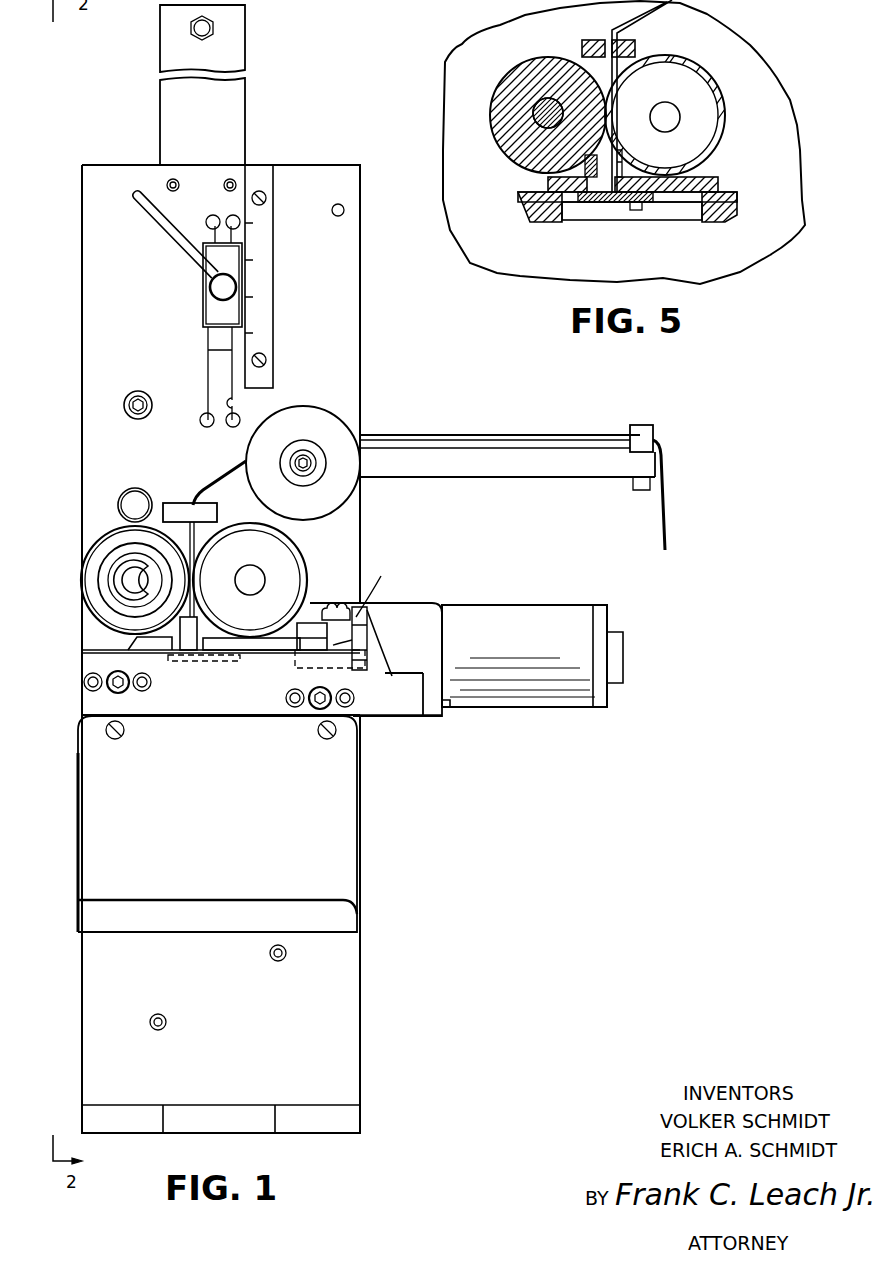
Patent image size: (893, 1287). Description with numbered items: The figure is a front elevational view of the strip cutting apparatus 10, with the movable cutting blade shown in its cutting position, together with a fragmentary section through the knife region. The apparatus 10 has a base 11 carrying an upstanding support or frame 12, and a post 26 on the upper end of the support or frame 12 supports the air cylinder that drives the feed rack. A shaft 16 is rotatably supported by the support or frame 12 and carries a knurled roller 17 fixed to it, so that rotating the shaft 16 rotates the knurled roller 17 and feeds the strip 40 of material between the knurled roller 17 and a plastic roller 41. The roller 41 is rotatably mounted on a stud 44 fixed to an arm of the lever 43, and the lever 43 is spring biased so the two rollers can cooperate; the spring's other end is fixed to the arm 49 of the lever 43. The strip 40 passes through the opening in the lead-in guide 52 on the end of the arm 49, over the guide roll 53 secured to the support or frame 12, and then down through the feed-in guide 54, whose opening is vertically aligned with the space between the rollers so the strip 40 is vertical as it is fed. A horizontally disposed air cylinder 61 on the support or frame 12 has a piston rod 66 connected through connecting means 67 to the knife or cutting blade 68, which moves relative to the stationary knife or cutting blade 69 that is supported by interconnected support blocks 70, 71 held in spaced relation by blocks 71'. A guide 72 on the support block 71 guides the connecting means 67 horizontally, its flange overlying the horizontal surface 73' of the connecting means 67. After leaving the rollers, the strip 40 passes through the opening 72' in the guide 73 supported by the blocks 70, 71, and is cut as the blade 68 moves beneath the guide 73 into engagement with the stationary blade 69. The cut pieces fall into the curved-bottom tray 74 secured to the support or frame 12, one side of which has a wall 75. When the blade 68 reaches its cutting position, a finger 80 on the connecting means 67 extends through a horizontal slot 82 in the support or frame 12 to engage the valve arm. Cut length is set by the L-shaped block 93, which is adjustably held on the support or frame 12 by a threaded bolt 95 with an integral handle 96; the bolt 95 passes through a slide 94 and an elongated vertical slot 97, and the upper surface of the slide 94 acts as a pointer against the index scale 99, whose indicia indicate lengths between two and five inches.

In FIG. 1, the apparatus 10 is at (442, 875).
In FIG. 1, the base 11 is at (358, 1128).
In FIG. 1, the support or frame 12 is at (358, 1012).
In FIG. 5, the support or frame 12 is at (745, 42).
In FIG. 1, the shaft 16 is at (258, 592).
In FIG. 5, the shaft 16 is at (668, 108).
In FIG. 1, the knurled roller 17 is at (320, 545).
In FIG. 5, the knurled roller 17 is at (697, 64).
In FIG. 1, the post 26 is at (242, 112).
In FIG. 1, the strip of material 40 is at (228, 478).
In FIG. 1, the roller 41 is at (95, 537).
In FIG. 5, the roller 41 is at (535, 62).
In FIG. 1, the lever 43 is at (478, 480).
In FIG. 1, the stud 44 is at (123, 588).
In FIG. 5, the stud 44 is at (540, 112).
In FIG. 1, the arm 49 is at (523, 437).
In FIG. 1, the lead-in guide 52 is at (645, 425).
In FIG. 1, the guide roll 53 is at (303, 410).
In FIG. 1, the feed-in guide 54 is at (217, 503).
In FIG. 5, the feed-in guide 54 is at (595, 40).
In FIG. 1, the air cylinder 61 is at (513, 712).
In FIG. 1, the piston rod 66 is at (372, 648).
In FIG. 1, the connecting means 67 is at (320, 643).
In FIG. 5, the connecting means 67 is at (712, 177).
In FIG. 1, the knife or cutting blade 68 is at (210, 661).
In FIG. 5, the knife or cutting blade 68 is at (618, 210).
In FIG. 1, the stationary knife or cutting blade 69 is at (140, 648).
In FIG. 5, the stationary knife or cutting blade 69 is at (545, 170).
In FIG. 5, the support block 70 is at (683, 222).
In FIG. 1, the support block 71 is at (221, 730).
In FIG. 5, the blocks 71' is at (632, 221).
In FIG. 1, the guide 72 is at (251, 664).
In FIG. 5, the opening 72' is at (602, 220).
In FIG. 1, the guide 73 is at (178, 653).
In FIG. 5, the guide 73 is at (628, 96).
In FIG. 1, the horizontal surface 73' is at (369, 638).
In FIG. 1, the tray 74 is at (236, 826).
In FIG. 1, the wall 75 is at (78, 868).
In FIG. 1, the finger 80 is at (323, 603).
In FIG. 1, the horizontal slot 82 is at (375, 586).
In FIG. 1, the L-shaped block 93 is at (218, 348).
In FIG. 1, the slide 94 is at (218, 330).
In FIG. 1, the threaded bolt 95 is at (213, 298).
In FIG. 1, the handle 96 is at (173, 246).
In FIG. 1, the elongated vertical slot 97 is at (236, 407).
In FIG. 1, the index scale 99 is at (273, 327).